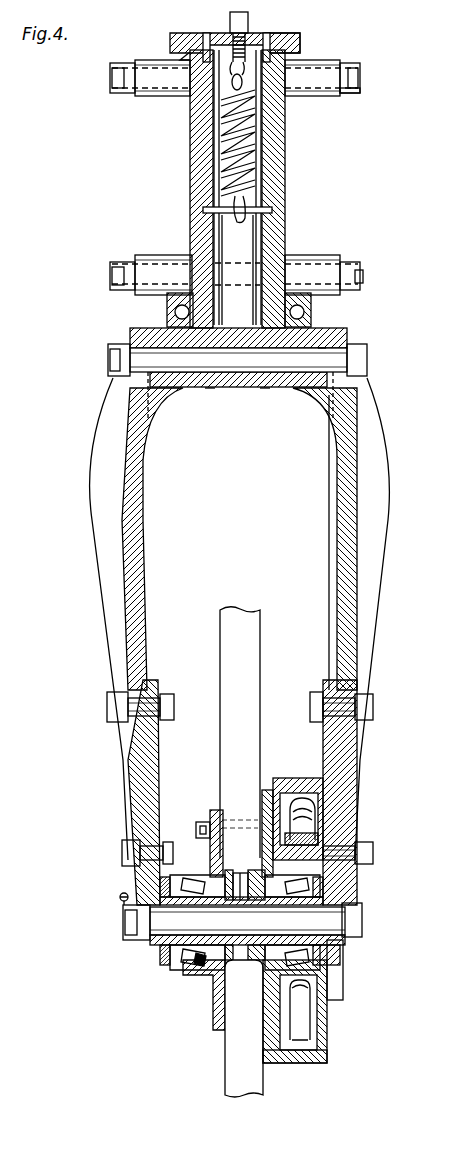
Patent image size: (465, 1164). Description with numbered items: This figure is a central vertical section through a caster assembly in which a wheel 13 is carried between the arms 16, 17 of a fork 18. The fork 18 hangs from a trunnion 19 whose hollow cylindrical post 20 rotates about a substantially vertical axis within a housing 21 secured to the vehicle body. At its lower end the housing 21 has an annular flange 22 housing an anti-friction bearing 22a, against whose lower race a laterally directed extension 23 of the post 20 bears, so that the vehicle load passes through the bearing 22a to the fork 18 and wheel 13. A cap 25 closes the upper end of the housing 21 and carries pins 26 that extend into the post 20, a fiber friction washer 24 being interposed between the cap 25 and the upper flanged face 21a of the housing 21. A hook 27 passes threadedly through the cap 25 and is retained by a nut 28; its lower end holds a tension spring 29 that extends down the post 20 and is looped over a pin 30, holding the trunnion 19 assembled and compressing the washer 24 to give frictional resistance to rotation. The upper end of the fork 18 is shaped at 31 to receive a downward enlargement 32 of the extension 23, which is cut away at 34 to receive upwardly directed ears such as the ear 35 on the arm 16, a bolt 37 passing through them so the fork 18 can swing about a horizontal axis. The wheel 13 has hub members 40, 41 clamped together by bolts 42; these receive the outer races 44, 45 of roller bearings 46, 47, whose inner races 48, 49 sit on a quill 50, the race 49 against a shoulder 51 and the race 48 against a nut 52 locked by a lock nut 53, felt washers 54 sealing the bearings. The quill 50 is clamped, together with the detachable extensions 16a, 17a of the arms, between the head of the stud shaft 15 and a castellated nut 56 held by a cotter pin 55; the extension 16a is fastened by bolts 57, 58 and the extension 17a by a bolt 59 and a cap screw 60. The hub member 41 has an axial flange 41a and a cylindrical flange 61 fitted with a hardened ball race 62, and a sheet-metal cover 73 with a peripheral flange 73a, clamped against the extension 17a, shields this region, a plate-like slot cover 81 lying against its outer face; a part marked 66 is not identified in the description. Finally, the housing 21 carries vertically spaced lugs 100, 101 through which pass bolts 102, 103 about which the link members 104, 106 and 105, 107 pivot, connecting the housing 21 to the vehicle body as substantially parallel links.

The wheel 13 is at (270, 646).
The stud shaft 15 is at (246, 874).
The arm 16 is at (143, 642).
The extension 16a is at (158, 745).
The arm 17 is at (330, 582).
The extension 17a is at (340, 750).
The fork 18 is at (233, 641).
The trunnion 19 is at (278, 233).
The post 20 is at (262, 156).
The housing 21 is at (285, 131).
The upper flanged face 21a is at (192, 62).
The flange 22 is at (167, 306).
The anti-friction bearing 22a is at (150, 377).
The extension 23 is at (347, 333).
The friction washer 24 is at (300, 49).
The cap 25 is at (300, 38).
The pins 26 is at (207, 33).
The hook 27 is at (226, 84).
The nut 28 is at (247, 27).
The spring 29 is at (221, 140).
The pin 30 is at (270, 198).
The shaped upper end of fork 31 is at (215, 389).
The enlargement 32 is at (265, 389).
The cut-away portion 34 is at (322, 344).
The ear 35 is at (118, 349).
The bolt 37 is at (367, 358).
The hub member 40 is at (210, 850).
The hub member 41 is at (265, 850).
The flange 41a is at (325, 882).
The bolts 42 is at (200, 828).
The outer race 44 is at (208, 966).
The outer race 45 is at (258, 972).
The anti-friction bearing 46 is at (200, 964).
The anti-friction bearing 47 is at (282, 972).
The inner race 48 is at (172, 962).
The inner race 49 is at (362, 925).
The quill 50 is at (222, 906).
The shoulder 51 is at (340, 951).
The nut 52 is at (180, 956).
The lock nut 53 is at (160, 944).
The felt washers 54 is at (185, 882).
The cotter pin 55 is at (120, 899).
The castellated nut 56 is at (126, 926).
The bolt 57 is at (116, 716).
The bolt 58 is at (122, 852).
The bolt 59 is at (340, 703).
The cap screw 60 is at (373, 852).
The cylindrical flange 61 is at (300, 778).
The ball race 62 is at (318, 806).
The threaded portion 66 is at (320, 837).
The cover 73 is at (327, 1025).
The flange 73a is at (325, 1064).
The slot cover 81 is at (343, 983).
The lug 100 is at (160, 60).
The lug 101 is at (168, 257).
The bolt 102 is at (360, 78).
The bolt 103 is at (362, 272).
The link member 104 is at (126, 63).
The link member 105 is at (126, 262).
The link member 106 is at (350, 93).
The link member 107 is at (350, 262).